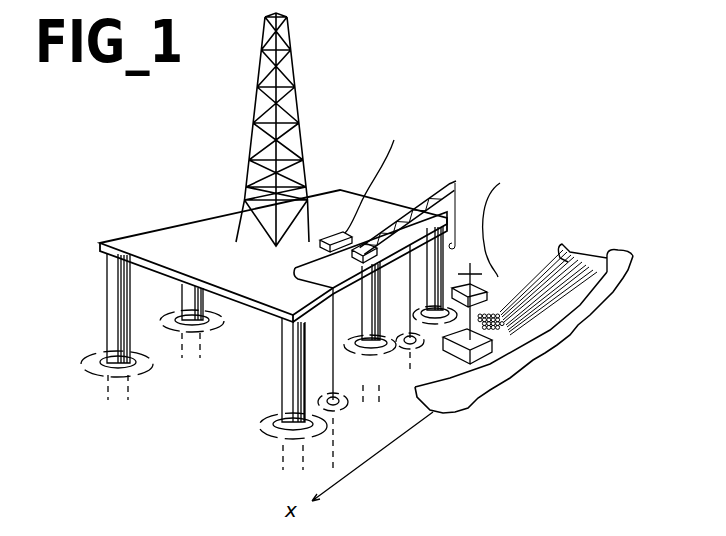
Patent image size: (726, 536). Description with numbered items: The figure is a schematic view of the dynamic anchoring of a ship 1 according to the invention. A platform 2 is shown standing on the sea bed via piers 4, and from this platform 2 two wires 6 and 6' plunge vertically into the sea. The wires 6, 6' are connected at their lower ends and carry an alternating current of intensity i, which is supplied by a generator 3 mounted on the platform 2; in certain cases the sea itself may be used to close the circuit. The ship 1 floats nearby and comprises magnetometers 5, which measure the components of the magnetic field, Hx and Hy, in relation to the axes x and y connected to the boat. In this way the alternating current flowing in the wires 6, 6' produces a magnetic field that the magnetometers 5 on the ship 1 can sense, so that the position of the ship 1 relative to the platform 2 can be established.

The ship 1 is at (620, 276).
The platform 2 is at (187, 218).
The generator 3 is at (343, 233).
The piers 4 is at (120, 287).
The magnetometers 5 is at (485, 290).
The wire 6 is at (335, 379).
The wire 6' is at (404, 308).